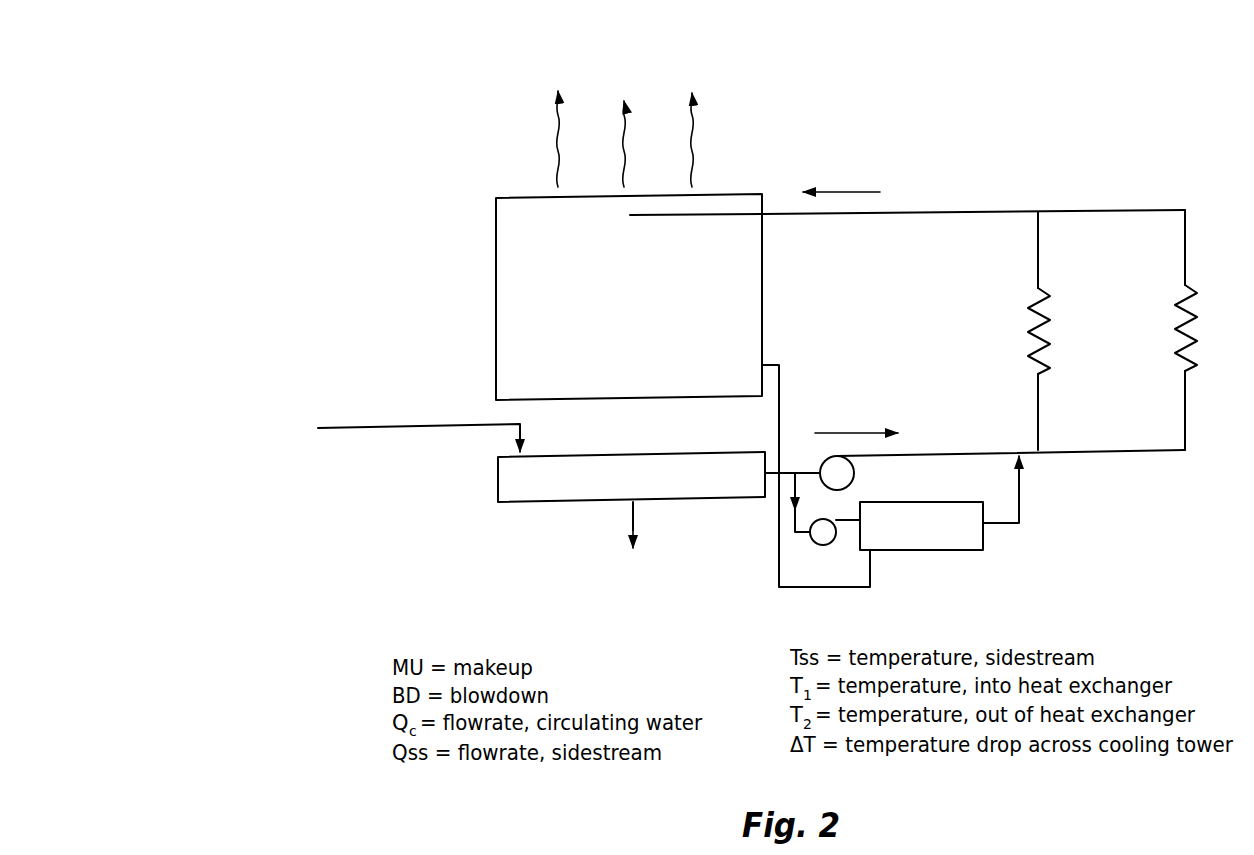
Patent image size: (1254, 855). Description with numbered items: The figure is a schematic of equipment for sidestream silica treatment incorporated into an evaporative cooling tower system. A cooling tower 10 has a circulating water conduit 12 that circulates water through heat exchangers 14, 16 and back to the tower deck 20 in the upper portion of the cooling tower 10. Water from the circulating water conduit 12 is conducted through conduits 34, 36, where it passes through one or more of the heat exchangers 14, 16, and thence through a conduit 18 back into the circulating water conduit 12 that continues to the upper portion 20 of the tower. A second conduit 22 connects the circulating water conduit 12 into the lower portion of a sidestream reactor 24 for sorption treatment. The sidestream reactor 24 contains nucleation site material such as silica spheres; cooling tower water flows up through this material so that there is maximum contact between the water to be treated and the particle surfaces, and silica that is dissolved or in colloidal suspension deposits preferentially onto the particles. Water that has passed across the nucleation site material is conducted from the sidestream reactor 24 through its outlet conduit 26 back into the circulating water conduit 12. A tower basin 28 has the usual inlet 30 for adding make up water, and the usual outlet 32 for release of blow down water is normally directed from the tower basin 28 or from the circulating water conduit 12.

The cooling tower 10 is at (577, 267).
The circulating water conduit 12 is at (779, 405).
The heat exchanger 14 is at (1050, 325).
The heat exchanger 16 is at (1197, 340).
The conduit 18 is at (828, 216).
The tower deck 20 is at (630, 215).
The second conduit 22 is at (832, 589).
The sidestream reactor 24 is at (890, 551).
The outlet conduit 26 is at (1021, 487).
The tower basin 28 is at (720, 486).
The inlet 30 is at (446, 424).
The outlet 32 is at (632, 523).
The conduit 34 is at (1041, 390).
The conduit 36 is at (1187, 412).